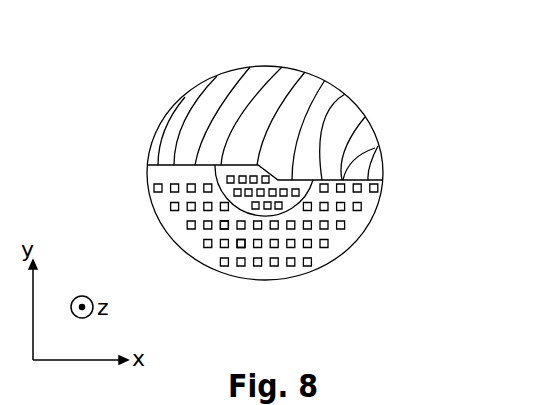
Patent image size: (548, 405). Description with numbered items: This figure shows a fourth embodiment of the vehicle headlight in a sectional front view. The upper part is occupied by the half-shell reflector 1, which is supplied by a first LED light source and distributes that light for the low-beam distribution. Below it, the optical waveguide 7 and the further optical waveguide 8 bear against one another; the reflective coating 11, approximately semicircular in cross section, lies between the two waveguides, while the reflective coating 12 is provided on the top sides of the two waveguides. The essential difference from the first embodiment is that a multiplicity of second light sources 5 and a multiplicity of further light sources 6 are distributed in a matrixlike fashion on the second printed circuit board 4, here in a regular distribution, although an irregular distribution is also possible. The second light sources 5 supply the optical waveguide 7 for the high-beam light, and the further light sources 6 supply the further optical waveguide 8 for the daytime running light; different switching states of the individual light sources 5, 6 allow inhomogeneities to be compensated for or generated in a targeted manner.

The half-shell reflector 1 is at (313, 103).
The second printed circuit board 4 is at (190, 240).
The second light sources 5 is at (295, 196).
The further light sources 6 is at (237, 248).
The optical waveguide 7 is at (297, 175).
The further optical waveguide 8 is at (340, 250).
The reflective coating 11 is at (265, 217).
The reflective coating 12 is at (375, 148).